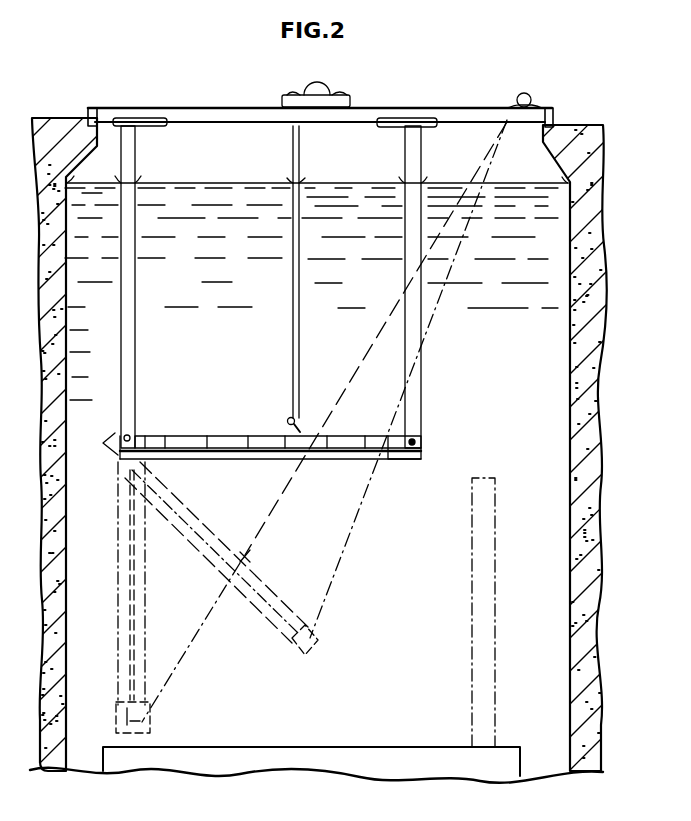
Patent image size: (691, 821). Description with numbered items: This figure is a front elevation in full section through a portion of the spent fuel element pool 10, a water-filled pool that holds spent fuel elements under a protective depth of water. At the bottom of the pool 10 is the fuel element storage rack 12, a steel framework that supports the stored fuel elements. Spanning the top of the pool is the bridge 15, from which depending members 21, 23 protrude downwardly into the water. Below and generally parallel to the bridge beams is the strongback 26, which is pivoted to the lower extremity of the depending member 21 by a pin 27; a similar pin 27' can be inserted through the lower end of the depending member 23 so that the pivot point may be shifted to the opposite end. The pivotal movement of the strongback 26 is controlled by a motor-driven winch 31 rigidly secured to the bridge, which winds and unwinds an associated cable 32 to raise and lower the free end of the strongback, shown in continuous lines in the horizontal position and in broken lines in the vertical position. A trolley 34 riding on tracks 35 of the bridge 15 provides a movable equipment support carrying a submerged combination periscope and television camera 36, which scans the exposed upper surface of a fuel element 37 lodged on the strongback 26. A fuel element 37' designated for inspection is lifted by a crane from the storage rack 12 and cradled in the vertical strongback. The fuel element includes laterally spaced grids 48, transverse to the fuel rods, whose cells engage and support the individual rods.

The spent fuel element pool 10 is at (607, 330).
The fuel element storage rack 12 is at (357, 746).
The bridge 15 is at (258, 121).
The depending member 21 is at (128, 293).
The depending member 23 is at (410, 266).
The strongback 26 is at (243, 457).
The pin 27 is at (444, 428).
The pin 27' is at (101, 428).
The motor-driven winch 31 is at (526, 94).
The cable 32 is at (350, 558).
The trolley 34 is at (320, 86).
The tracks 35 is at (393, 107).
The combination periscope and television camera 36 is at (295, 297).
The fuel element 37 is at (311, 427).
The fuel element 37' is at (516, 612).
The grids 48 is at (247, 436).